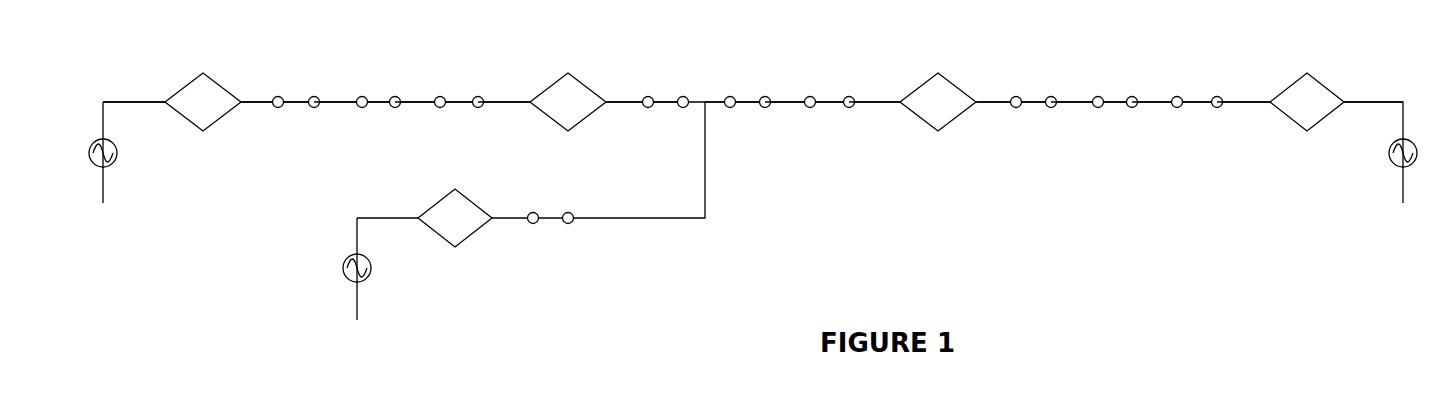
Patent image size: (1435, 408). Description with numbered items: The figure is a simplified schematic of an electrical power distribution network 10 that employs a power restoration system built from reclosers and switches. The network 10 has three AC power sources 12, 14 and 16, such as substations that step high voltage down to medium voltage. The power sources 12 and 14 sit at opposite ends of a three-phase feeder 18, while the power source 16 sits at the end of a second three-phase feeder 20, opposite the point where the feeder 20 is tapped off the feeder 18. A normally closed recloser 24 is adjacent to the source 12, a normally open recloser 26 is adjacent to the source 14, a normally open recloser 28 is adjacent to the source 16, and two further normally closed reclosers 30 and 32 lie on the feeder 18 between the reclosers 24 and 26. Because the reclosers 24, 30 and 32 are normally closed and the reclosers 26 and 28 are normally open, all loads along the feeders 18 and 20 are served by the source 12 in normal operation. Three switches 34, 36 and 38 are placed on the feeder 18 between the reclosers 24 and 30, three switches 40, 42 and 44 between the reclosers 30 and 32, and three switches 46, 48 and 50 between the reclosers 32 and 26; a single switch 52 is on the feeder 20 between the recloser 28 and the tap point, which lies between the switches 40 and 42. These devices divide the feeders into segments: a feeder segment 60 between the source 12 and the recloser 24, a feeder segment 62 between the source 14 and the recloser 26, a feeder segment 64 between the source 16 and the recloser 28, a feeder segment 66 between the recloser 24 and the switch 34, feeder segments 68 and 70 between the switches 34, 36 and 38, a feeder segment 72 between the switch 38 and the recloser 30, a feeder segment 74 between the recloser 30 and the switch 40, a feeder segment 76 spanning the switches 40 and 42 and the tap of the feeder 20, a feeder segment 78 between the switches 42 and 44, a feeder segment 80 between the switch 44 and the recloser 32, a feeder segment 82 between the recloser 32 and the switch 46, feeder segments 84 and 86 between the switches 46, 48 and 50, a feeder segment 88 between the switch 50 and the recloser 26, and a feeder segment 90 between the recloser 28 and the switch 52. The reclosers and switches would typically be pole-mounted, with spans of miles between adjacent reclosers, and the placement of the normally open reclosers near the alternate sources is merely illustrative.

The electrical power distribution network 10 is at (740, 42).
The AC power source 12 is at (117, 152).
The AC power source 14 is at (1392, 165).
The AC power source 16 is at (373, 268).
The three-phase feeder 18 is at (127, 90).
The three-phase feeder 20 is at (712, 158).
The normally closed recloser 24 is at (183, 121).
The normally open recloser 26 is at (1323, 120).
The normally open recloser 28 is at (481, 231).
The normally closed recloser 30 is at (586, 88).
The normally closed recloser 32 is at (953, 119).
The switch 34 is at (295, 102).
The switch 36 is at (378, 102).
The switch 38 is at (460, 102).
The switch 40 is at (665, 102).
The switch 42 is at (747, 102).
The switch 44 is at (827, 102).
The switch 46 is at (1032, 102).
The switch 48 is at (1113, 102).
The switch 50 is at (1200, 102).
The switch 52 is at (550, 218).
The feeder segment 60 is at (100, 118).
The feeder segment 62 is at (1367, 102).
The feeder segment 64 is at (387, 218).
The feeder segment 66 is at (257, 102).
The feeder segment 68 is at (342, 102).
The feeder segment 70 is at (420, 102).
The feeder segment 72 is at (513, 102).
The feeder segment 74 is at (623, 102).
The feeder segment 76 is at (715, 102).
The feeder segment 78 is at (790, 102).
The feeder segment 80 is at (872, 102).
The feeder segment 82 is at (995, 102).
The feeder segment 84 is at (1080, 102).
The feeder segment 86 is at (1157, 102).
The feeder segment 88 is at (1240, 102).
The feeder segment 90 is at (512, 218).